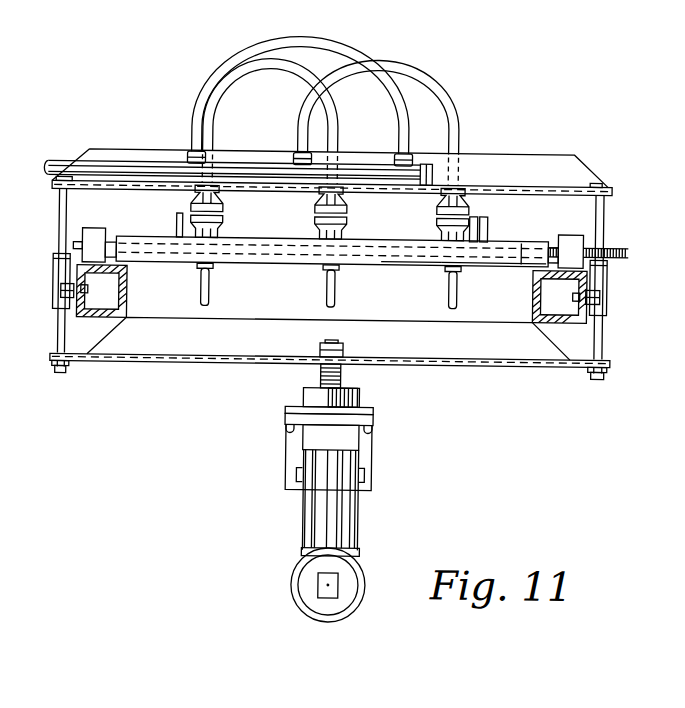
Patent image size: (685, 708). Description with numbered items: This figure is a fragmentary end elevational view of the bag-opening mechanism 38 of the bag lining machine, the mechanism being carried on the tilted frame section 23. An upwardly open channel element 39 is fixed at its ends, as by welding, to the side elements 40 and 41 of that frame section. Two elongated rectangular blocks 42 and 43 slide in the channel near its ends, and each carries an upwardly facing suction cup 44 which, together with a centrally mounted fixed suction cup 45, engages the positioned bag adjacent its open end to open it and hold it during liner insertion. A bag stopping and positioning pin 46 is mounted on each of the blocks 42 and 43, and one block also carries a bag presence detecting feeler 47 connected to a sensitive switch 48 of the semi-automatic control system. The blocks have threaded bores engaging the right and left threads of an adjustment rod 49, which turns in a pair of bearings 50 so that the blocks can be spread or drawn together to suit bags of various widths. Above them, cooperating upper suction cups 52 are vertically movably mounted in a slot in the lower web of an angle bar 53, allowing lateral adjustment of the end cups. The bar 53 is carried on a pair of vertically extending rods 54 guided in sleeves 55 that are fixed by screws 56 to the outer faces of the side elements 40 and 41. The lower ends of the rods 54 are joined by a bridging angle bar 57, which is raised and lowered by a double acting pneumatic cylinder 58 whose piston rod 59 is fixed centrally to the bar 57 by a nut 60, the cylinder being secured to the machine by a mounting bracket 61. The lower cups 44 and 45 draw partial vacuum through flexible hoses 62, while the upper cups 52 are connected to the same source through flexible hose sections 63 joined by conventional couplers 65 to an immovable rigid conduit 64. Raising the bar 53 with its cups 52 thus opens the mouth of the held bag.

The frame section 23 is at (83, 318).
The bag-opening mechanism 38 is at (595, 157).
The channel element 39 is at (533, 240).
The side element 40 is at (125, 296).
The side element 41 is at (531, 298).
The rectangular block 42 is at (153, 247).
The rectangular block 43 is at (496, 244).
The suction cup 44 is at (220, 228).
The fixed suction cup 45 is at (316, 227).
The bag stopping and positioning pin 46 is at (176, 228).
The bag presence detecting feeler 47 is at (470, 228).
The sensitive switch 48 is at (430, 240).
The adjustment rod 49 is at (618, 249).
The bearing 50 is at (90, 238).
The upper suction cup 52 is at (228, 214).
The angle bar 53 is at (122, 163).
The vertically extending rod 54 is at (58, 214).
The sleeve 55 is at (51, 270).
The screw 56 is at (58, 296).
The bridging angle bar 57 is at (489, 363).
The double acting pneumatic cylinder 58 is at (341, 510).
The piston rod 59 is at (341, 377).
The nut 60 is at (343, 350).
The mounting bracket 61 is at (373, 424).
The flexible hose 62 is at (323, 292).
The flexible hose section 63 is at (403, 69).
The rigid conduit 64 is at (46, 174).
The coupler 65 is at (287, 150).